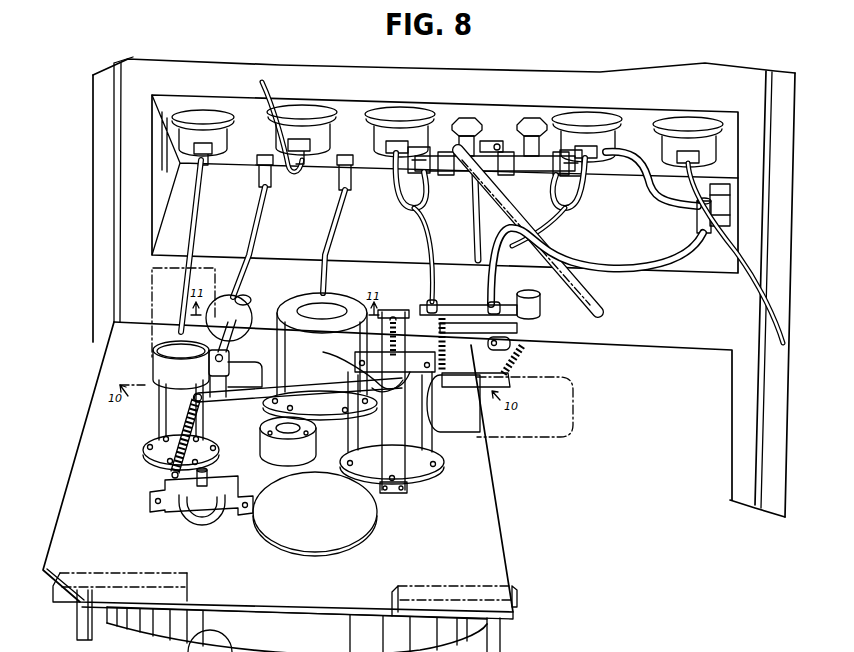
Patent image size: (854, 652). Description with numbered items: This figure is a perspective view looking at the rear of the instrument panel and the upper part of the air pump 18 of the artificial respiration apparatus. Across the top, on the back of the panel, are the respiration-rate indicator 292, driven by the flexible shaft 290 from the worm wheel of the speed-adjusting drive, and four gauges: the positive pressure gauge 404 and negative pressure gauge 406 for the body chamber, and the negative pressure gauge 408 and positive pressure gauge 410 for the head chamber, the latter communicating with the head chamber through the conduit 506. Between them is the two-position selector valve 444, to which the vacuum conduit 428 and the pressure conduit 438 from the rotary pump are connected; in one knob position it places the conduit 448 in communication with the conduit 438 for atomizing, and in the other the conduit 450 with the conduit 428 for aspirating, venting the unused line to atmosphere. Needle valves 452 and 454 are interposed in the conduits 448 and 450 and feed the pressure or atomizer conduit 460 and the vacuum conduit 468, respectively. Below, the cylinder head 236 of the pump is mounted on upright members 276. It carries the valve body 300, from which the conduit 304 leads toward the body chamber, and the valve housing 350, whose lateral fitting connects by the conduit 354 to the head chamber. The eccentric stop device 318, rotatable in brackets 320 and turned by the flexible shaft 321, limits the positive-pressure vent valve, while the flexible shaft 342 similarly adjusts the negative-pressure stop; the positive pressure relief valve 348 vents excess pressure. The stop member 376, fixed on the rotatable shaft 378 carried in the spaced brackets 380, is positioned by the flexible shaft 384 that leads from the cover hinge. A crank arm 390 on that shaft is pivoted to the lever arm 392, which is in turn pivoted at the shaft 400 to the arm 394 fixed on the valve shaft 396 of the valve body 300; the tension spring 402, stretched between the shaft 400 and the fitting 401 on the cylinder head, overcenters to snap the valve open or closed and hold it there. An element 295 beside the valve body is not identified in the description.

The air pump 18 is at (129, 627).
The cylinder head 236 is at (468, 512).
The upright members 276 is at (76, 624).
The flexible shaft 290 is at (201, 200).
The indicator 292 is at (205, 113).
The collar 295 is at (286, 459).
The valve body 300 is at (157, 361).
The conduit 304 is at (156, 283).
The adjustable stop device 318 is at (248, 303).
The brackets 320 is at (236, 355).
The flexible shaft 321 is at (258, 229).
The flexible shaft 342 is at (337, 229).
The positive pressure relief valve 348 is at (226, 524).
The valve housing 350 is at (300, 294).
The conduit 354 is at (563, 441).
The stop member 376 is at (362, 357).
The rotatable shaft 378 is at (380, 340).
The brackets 380 is at (394, 310).
The flexible shaft 384 is at (332, 366).
The crank arm 390 is at (437, 382).
The lever arm 392 is at (248, 397).
The arm 394 is at (178, 422).
The valve shaft 396 is at (155, 455).
The shaft 400 is at (192, 400).
The fitting 401 is at (176, 474).
The tension spring 402 is at (215, 449).
The positive pressure gauge 404 is at (306, 114).
The negative pressure gauge 406 is at (406, 116).
The negative pressure gauge 408 is at (594, 120).
The positive pressure gauge 410 is at (690, 122).
The conduit 428 is at (600, 304).
The pressure conduit 438 is at (470, 229).
The selector valve 444 is at (506, 145).
The conduit 448 is at (427, 210).
The conduit 450 is at (564, 214).
The needle valve 452 is at (417, 176).
The needle valve 454 is at (578, 187).
The pressure or atomizer conduit 460 is at (641, 260).
The vacuum conduit 468 is at (656, 195).
The conduit 506 is at (737, 292).